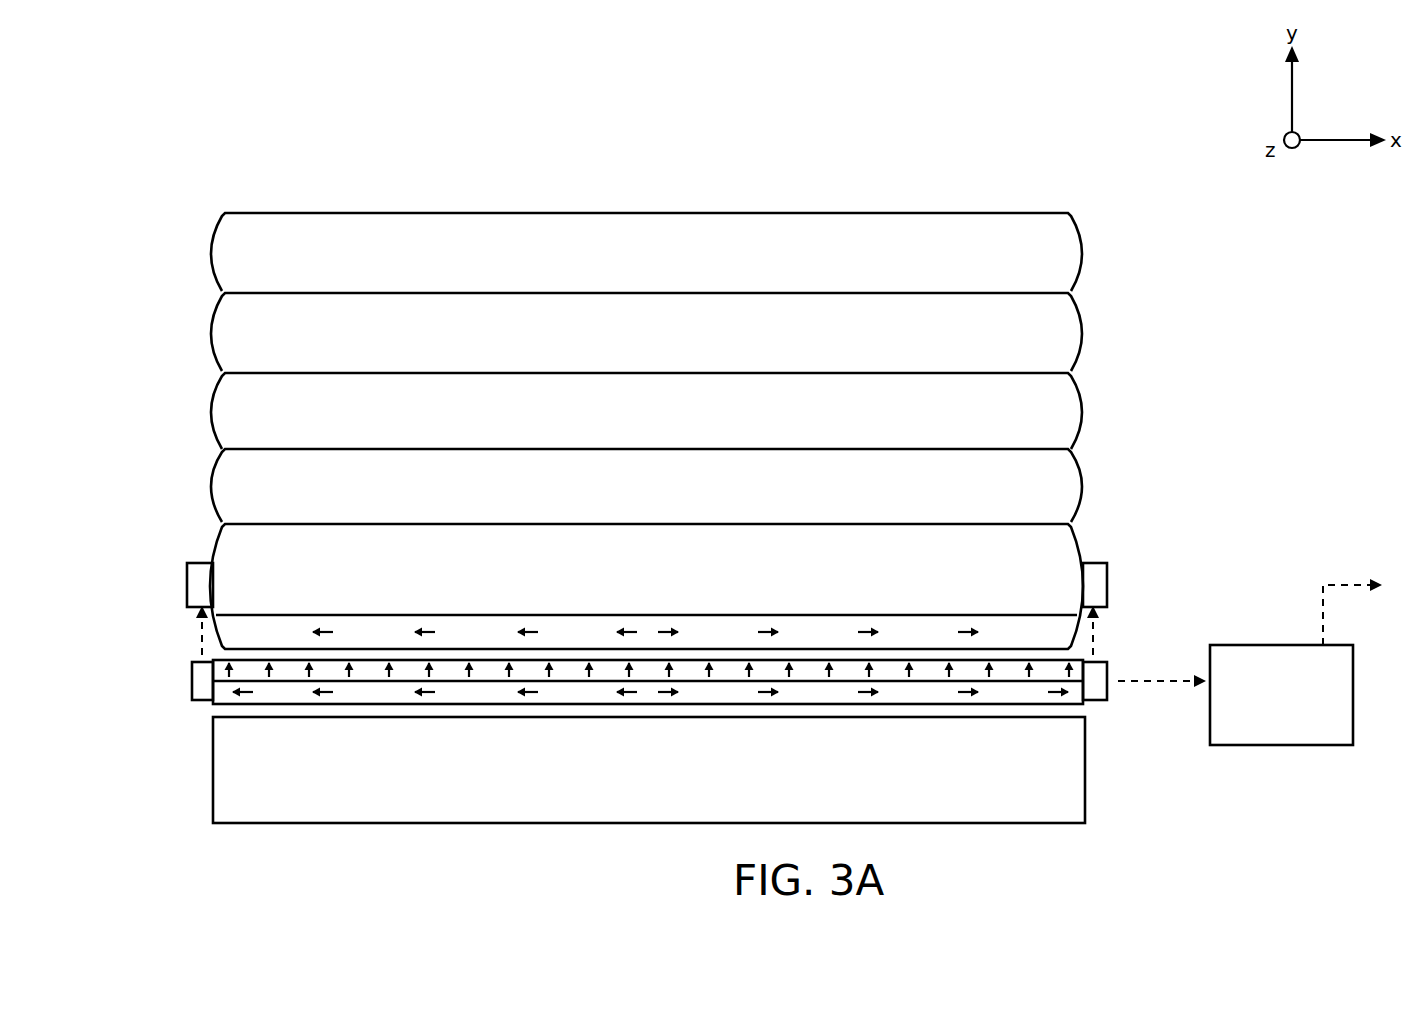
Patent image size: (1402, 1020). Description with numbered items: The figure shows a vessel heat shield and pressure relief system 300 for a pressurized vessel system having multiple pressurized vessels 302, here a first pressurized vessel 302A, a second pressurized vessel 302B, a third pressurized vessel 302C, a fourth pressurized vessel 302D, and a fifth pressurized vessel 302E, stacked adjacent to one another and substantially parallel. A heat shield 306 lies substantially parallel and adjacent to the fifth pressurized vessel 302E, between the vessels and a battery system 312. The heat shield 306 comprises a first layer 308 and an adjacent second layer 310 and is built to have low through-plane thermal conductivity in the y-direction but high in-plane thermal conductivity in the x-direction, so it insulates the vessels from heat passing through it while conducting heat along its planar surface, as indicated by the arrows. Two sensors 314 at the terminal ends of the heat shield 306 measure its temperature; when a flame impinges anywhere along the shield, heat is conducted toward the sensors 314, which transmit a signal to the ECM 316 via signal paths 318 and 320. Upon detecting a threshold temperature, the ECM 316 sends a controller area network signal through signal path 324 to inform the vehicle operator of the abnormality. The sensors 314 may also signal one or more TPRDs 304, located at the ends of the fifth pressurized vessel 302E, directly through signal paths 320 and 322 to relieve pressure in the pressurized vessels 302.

The vessel heat shield and pressure relief system 300 is at (209, 92).
The pressurized vessels 302 is at (938, 222).
The first pressurized vessel 302A is at (1088, 262).
The second pressurized vessel 302B is at (1088, 344).
The third pressurized vessel 302C is at (1088, 419).
The fourth pressurized vessel 302D is at (1087, 494).
The fifth pressurized vessel 302E is at (1085, 552).
The TPRDs 304 is at (188, 576).
The heat shield 306 is at (1085, 706).
The first layer 308 is at (267, 698).
The second layer 310 is at (211, 676).
The battery system 312 is at (649, 770).
The sensors 314 is at (192, 672).
The ECM 316 is at (1281, 695).
The signal path 318 is at (1152, 682).
The signal path 320 is at (1100, 647).
The signal path 322 is at (200, 641).
The signal path 324 is at (1354, 585).